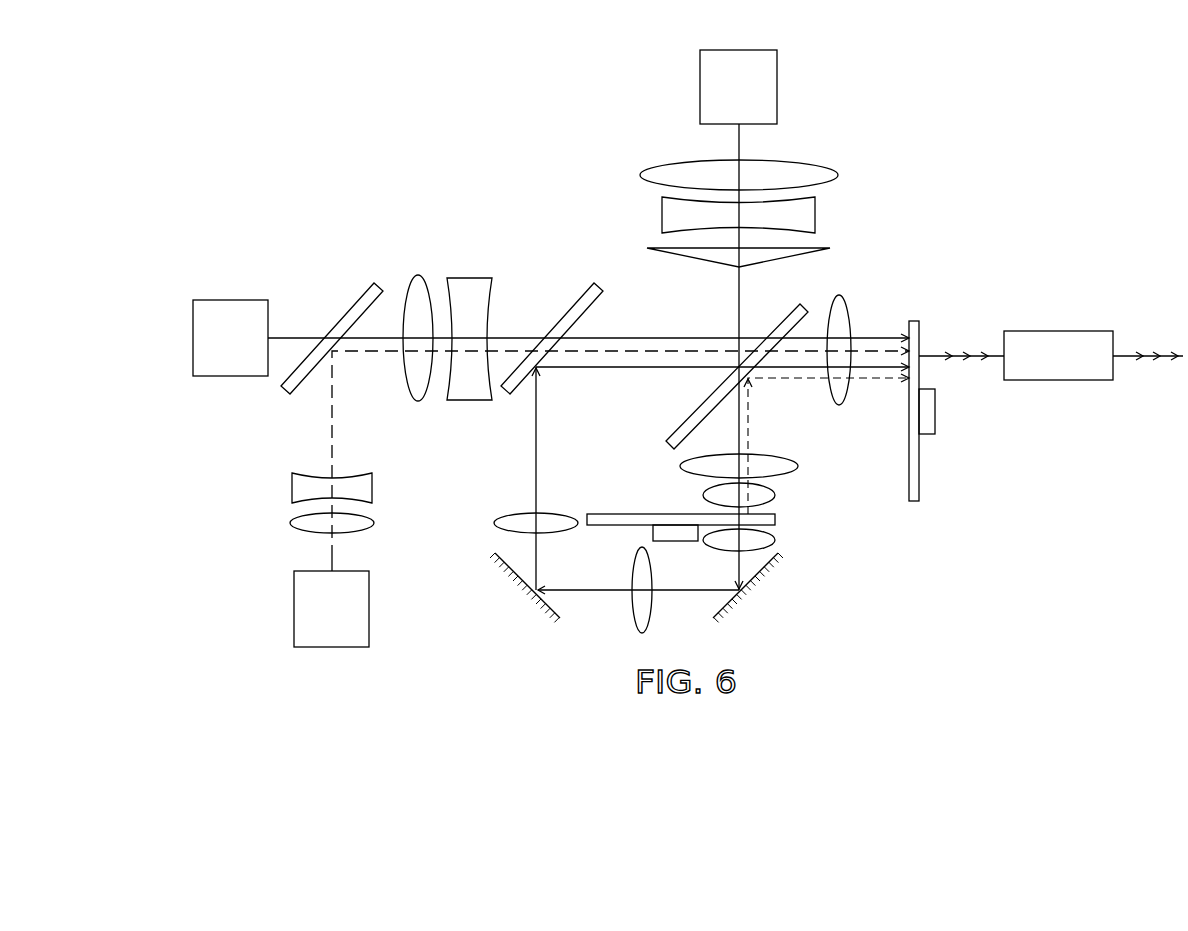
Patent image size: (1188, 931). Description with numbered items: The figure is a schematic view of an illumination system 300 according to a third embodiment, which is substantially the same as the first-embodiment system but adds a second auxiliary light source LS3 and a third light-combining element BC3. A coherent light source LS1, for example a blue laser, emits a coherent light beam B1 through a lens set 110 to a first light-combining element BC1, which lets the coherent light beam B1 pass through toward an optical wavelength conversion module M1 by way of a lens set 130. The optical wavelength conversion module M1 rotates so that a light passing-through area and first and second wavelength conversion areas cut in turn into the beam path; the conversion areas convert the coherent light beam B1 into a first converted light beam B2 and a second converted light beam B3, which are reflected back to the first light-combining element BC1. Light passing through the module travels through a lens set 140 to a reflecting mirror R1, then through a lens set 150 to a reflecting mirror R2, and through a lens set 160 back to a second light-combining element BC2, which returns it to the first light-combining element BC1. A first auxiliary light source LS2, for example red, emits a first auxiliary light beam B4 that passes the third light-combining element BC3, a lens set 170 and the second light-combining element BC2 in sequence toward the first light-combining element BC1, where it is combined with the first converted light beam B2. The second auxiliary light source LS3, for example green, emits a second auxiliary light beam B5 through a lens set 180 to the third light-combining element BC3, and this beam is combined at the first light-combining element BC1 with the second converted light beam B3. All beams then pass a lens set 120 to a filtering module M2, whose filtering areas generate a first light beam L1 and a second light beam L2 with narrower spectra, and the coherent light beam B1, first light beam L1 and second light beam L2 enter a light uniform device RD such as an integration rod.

The coherent light source LS1 is at (762, 88).
The first auxiliary light source LS2 is at (237, 315).
The second auxiliary light source LS3 is at (354, 613).
The coherent light beam B1 is at (740, 147).
The first converted light beam B2 is at (826, 444).
The second converted light beam B3 is at (753, 432).
The first auxiliary light beam B4 is at (305, 338).
The second auxiliary light beam B5 is at (340, 560).
The lens set 110 is at (850, 170).
The lens set 120 is at (853, 290).
The lens set 130 is at (805, 455).
The lens set 140 is at (784, 541).
The lens set 150 is at (645, 650).
The lens set 160 is at (486, 522).
The lens set 170 is at (492, 262).
The lens set 180 is at (278, 474).
The first light-combining element BC1 is at (803, 302).
The second light-combining element BC2 is at (596, 291).
The third light-combining element BC3 is at (375, 291).
The optical wavelength conversion module M1 is at (776, 519).
The filtering module M2 is at (913, 502).
The reflecting mirror R1 is at (738, 599).
The reflecting mirror R2 is at (545, 600).
The light uniform device RD is at (1059, 338).
The first light beam L1 is at (980, 352).
The second light beam L2 is at (960, 352).
The illumination system 300 is at (1147, 645).